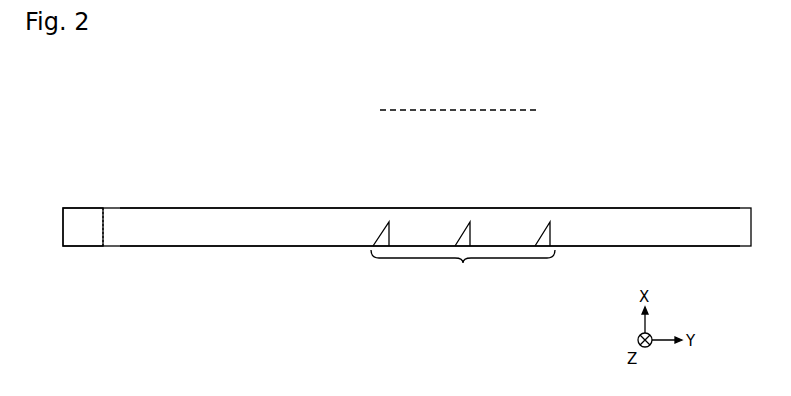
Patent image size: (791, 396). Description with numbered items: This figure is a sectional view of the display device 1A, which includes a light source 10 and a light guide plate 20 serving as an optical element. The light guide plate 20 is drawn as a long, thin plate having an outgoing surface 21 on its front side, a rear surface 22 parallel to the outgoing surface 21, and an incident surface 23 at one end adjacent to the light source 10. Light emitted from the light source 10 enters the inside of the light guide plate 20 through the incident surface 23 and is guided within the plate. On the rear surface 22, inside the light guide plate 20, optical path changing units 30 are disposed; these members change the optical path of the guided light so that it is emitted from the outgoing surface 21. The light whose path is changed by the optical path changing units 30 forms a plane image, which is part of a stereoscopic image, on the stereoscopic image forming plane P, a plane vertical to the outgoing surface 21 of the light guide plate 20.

The display device 1A is at (105, 99).
The stereoscopic image forming plane P is at (460, 108).
The light source 10 is at (84, 244).
The light guide plate 20 is at (698, 222).
The outgoing surface 21 is at (232, 207).
The rear surface 22 is at (231, 247).
The incident surface 23 is at (104, 226).
The optical path changing unit 30 is at (463, 255).